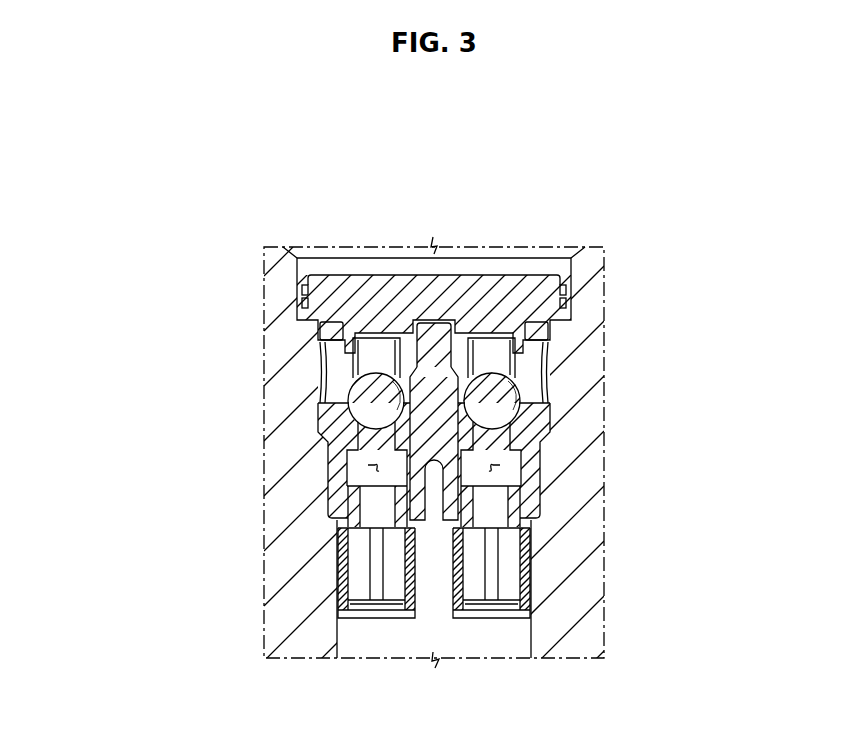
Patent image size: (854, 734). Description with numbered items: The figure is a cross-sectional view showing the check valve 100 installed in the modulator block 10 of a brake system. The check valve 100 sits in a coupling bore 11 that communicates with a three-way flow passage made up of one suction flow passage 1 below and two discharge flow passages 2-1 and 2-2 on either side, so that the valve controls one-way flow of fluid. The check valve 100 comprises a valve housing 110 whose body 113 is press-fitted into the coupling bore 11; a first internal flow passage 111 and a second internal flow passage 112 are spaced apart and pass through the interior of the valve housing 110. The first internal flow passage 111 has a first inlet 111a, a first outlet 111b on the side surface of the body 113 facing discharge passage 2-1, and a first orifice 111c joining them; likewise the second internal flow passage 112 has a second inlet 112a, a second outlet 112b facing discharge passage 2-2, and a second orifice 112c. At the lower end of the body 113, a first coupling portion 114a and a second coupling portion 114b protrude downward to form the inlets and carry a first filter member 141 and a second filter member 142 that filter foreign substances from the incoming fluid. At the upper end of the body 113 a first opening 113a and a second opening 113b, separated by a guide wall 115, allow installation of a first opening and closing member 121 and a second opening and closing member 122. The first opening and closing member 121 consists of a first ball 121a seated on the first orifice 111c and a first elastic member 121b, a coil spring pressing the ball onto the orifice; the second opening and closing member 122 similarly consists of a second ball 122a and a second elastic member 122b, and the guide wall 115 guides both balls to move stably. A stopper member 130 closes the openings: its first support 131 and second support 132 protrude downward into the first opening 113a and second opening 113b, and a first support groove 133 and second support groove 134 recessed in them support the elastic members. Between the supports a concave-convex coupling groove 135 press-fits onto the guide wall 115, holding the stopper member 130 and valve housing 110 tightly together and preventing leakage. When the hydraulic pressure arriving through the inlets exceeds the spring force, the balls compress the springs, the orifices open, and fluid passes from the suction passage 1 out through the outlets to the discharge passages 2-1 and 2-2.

The suction flow passage 1 is at (421, 643).
The modulator block 10 is at (266, 290).
The coupling bore 11 is at (538, 497).
The check valve 100 is at (477, 244).
The valve housing 110 is at (337, 470).
The first internal flow passage 111 is at (210, 402).
The first inlet 111a is at (270, 449).
The first outlet 111b is at (333, 405).
The first orifice 111c is at (338, 440).
The second internal flow passage 112 is at (658, 402).
The second inlet 112a is at (598, 449).
The second outlet 112b is at (535, 405).
The second orifice 112c is at (530, 440).
The body 113 is at (447, 398).
The first opening 113a is at (304, 300).
The second opening 113b is at (563, 301).
The first coupling portion 114a is at (335, 500).
The second coupling portion 114b is at (528, 502).
The guide wall 115 is at (405, 345).
The first opening and closing member 121 is at (210, 345).
The first ball 121a is at (335, 378).
The first elastic member 121b is at (335, 362).
The second opening and closing member 122 is at (658, 345).
The second ball 122a is at (533, 378).
The second elastic member 122b is at (533, 362).
The stopper member 130 is at (343, 288).
The first support 131 is at (322, 337).
The second support 132 is at (546, 337).
The first support groove 133 is at (366, 345).
The second support groove 134 is at (493, 345).
The coupling groove 135 is at (446, 340).
The first filter member 141 is at (345, 557).
The second filter member 142 is at (523, 557).
The first discharge flow passage 2-1 is at (333, 396).
The second discharge flow passage 2-2 is at (535, 396).